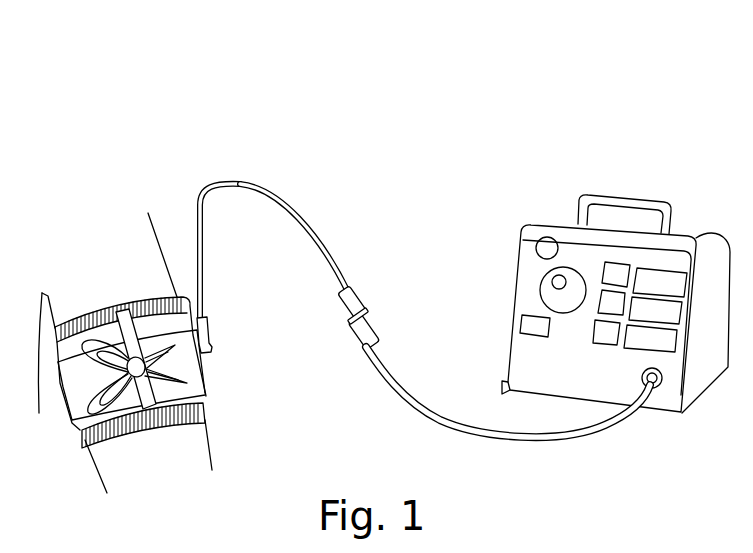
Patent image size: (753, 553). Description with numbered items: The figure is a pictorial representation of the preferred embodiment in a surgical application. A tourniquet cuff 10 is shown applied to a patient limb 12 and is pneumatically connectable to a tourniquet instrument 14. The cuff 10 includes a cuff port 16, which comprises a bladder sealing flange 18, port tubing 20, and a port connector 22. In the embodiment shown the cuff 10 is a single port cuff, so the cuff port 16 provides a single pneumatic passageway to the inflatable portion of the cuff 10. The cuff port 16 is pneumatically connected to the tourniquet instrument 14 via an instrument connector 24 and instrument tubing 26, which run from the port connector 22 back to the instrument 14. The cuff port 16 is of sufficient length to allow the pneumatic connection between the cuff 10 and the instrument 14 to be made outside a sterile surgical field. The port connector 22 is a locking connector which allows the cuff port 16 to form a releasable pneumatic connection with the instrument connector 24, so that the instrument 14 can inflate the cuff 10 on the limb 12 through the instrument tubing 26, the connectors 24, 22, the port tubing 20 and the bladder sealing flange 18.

The tourniquet cuff 10 is at (120, 294).
The patient limb 12 is at (212, 465).
The tourniquet instrument 14 is at (517, 262).
The cuff port 16 is at (372, 132).
The bladder sealing flange 18 is at (222, 328).
The port tubing 20 is at (268, 188).
The port connector 22 is at (360, 286).
The instrument connector 24 is at (374, 327).
The instrument tubing 26 is at (532, 435).